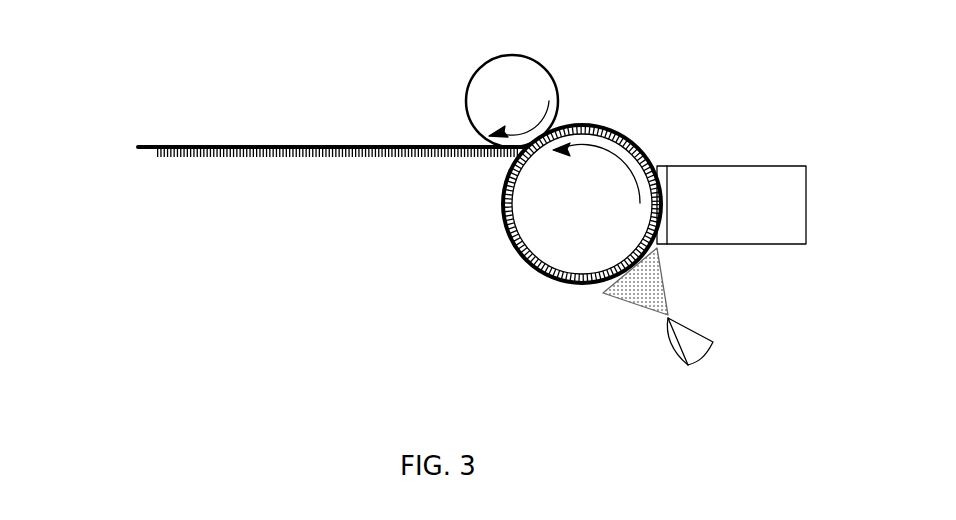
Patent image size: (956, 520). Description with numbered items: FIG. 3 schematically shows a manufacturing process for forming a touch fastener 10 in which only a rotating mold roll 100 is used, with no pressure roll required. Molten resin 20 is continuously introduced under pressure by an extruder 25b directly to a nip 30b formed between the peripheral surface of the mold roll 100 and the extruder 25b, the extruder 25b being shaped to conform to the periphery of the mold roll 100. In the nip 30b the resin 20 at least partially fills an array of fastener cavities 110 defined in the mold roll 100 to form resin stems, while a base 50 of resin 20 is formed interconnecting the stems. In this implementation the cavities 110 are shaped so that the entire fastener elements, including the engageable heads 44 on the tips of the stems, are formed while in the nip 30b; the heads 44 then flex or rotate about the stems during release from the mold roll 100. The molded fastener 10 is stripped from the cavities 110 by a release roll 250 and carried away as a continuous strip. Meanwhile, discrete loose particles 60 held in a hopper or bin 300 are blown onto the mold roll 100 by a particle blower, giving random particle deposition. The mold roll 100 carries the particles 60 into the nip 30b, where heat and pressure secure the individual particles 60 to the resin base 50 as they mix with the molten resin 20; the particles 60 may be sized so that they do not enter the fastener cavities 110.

The touch fastener 10 is at (134, 147).
The base 50 is at (352, 146).
The engageable heads 44 is at (213, 158).
The release roll 250 is at (486, 62).
The mold roll 100 is at (503, 233).
The fastener cavities 110 is at (524, 256).
The molten resin 20 is at (665, 186).
The extruder 25b is at (806, 204).
The nip 30b is at (664, 226).
The loose particles 60 is at (642, 287).
The hopper or bin 300 is at (693, 355).